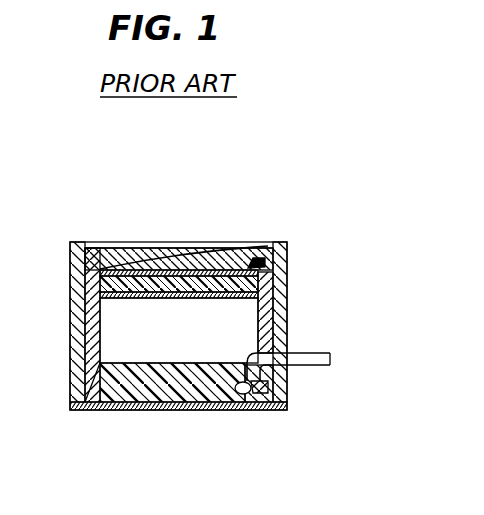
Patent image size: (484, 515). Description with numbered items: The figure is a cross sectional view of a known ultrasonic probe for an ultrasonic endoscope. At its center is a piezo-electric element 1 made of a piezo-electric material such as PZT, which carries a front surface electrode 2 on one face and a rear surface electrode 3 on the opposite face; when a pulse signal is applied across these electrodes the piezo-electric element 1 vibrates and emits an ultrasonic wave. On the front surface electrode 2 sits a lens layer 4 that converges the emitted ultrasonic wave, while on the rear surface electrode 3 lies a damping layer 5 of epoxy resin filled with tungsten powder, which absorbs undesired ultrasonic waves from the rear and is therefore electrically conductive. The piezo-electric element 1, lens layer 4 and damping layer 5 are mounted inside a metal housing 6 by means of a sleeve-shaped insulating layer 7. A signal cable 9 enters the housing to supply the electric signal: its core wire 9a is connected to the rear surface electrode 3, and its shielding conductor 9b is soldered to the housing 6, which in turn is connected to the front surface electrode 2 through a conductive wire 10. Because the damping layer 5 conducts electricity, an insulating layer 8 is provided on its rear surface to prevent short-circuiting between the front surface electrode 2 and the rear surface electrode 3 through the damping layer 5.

The piezo-electric element 1 is at (172, 268).
The front surface electrode 2 is at (224, 274).
The rear surface electrode 3 is at (73, 322).
The lens layer 4 is at (132, 253).
The damping layer 5 is at (232, 312).
The housing 6 is at (280, 259).
The insulating layer 7 is at (84, 362).
The insulating layer 8 is at (150, 388).
The signal cable 9 is at (314, 353).
The core wire 9a is at (240, 394).
The shielding conductor 9b is at (256, 393).
The conductive wire 10 is at (250, 255).